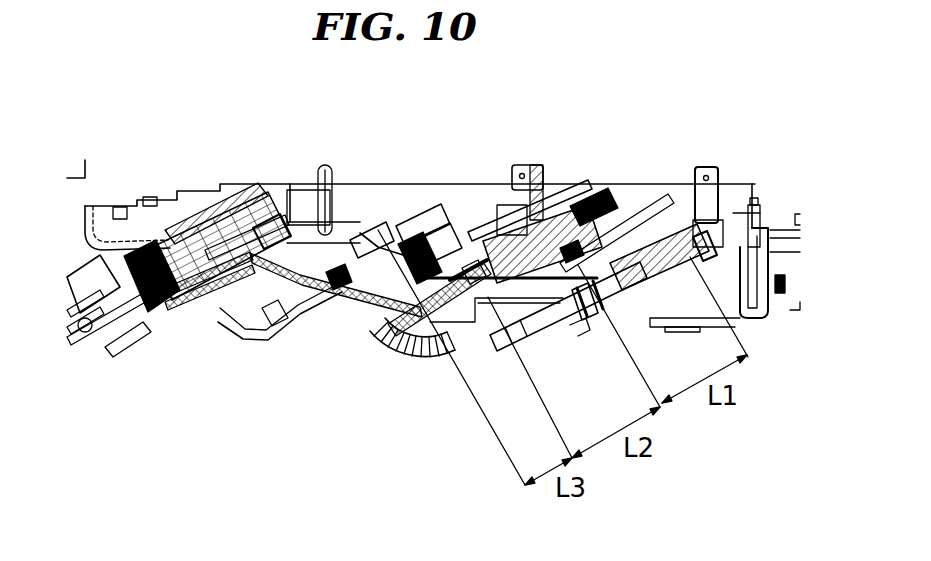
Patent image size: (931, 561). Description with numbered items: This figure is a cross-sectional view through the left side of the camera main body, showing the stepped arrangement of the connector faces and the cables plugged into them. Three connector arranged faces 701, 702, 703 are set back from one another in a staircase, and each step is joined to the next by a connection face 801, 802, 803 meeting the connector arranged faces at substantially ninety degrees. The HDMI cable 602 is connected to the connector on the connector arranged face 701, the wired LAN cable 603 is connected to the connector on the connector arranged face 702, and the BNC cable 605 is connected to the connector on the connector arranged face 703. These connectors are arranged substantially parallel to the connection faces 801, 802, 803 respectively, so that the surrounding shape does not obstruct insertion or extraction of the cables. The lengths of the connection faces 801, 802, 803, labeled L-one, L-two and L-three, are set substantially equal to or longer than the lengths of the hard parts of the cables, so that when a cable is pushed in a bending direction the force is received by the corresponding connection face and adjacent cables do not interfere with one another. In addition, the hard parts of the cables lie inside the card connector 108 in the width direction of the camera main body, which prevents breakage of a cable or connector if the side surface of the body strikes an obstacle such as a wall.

The BNC cable 605 is at (388, 235).
The connector arranged face 703 is at (450, 215).
The connection face 803 is at (392, 238).
The connection face 802 is at (468, 250).
The wired LAN cable 603 is at (523, 200).
The connector arranged face 702 is at (572, 215).
The connection face 801 is at (617, 225).
The HDMI cable 602 is at (660, 250).
The connector arranged face 701 is at (722, 225).
The card connector 108 is at (525, 298).